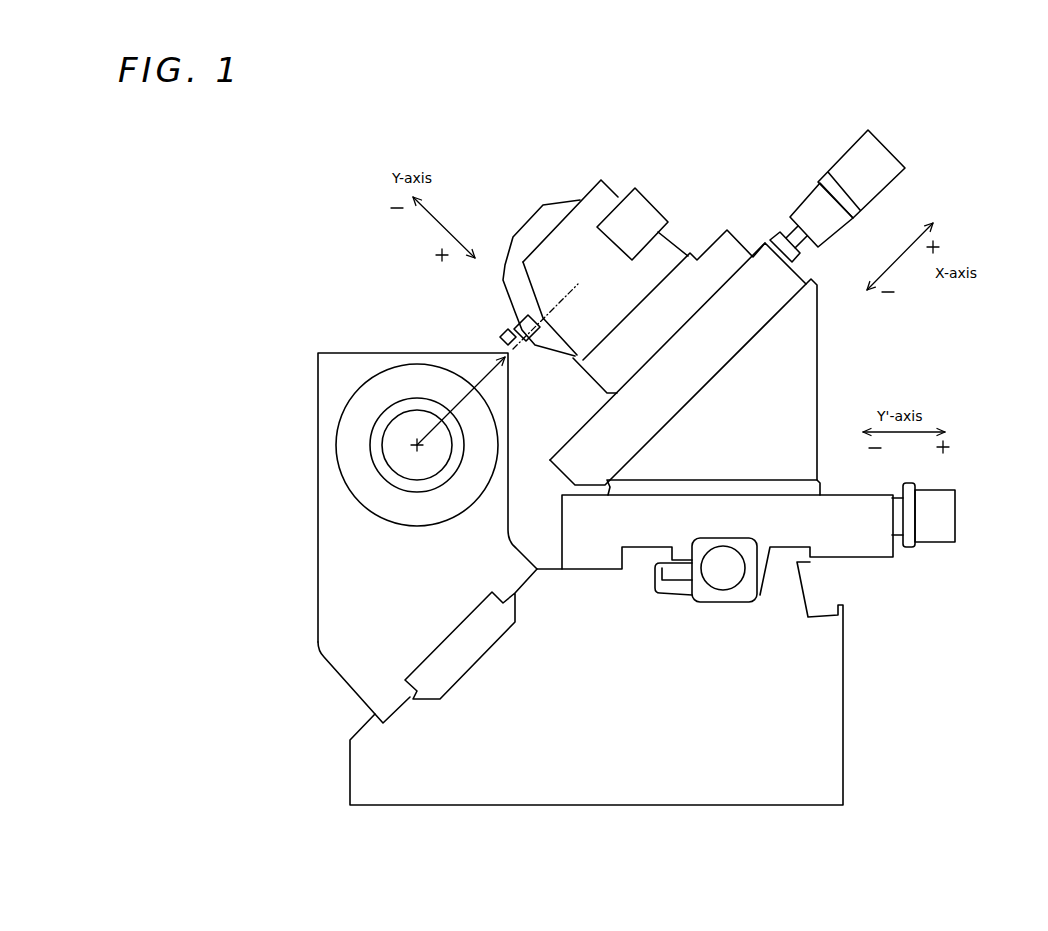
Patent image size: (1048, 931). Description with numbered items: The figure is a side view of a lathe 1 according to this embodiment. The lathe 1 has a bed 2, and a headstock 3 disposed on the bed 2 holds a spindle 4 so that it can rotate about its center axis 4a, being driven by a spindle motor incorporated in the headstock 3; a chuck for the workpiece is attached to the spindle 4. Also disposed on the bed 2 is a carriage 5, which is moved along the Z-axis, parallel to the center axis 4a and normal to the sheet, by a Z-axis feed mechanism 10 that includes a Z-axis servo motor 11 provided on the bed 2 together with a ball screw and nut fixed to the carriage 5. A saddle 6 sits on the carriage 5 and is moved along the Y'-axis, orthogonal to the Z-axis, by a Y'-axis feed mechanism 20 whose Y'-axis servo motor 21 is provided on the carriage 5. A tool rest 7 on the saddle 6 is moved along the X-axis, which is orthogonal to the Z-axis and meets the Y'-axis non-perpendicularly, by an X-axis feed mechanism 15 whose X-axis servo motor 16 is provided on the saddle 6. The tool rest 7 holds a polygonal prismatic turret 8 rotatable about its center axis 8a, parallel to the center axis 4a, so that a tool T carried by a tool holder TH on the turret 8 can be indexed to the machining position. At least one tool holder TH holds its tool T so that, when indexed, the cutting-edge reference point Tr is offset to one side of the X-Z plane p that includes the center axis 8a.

The lathe 1 is at (274, 208).
The bed 2 is at (835, 753).
The headstock 3 is at (318, 590).
The spindle 4 is at (372, 455).
The center axis 4a is at (413, 440).
The carriage 5 is at (845, 550).
The saddle 6 is at (813, 332).
The tool rest 7 is at (620, 193).
The turret 8 is at (528, 217).
The center axis 8a is at (580, 277).
The Z-axis feed mechanism 10 is at (748, 603).
The Z-axis servo motor 11 is at (750, 597).
The X-axis feed mechanism 15 is at (778, 195).
The X-axis servo motor 16 is at (893, 145).
The Y'-axis feed mechanism 20 is at (903, 553).
The Y'-axis servo motor 21 is at (953, 517).
The tool T is at (498, 333).
The tool holder TH is at (530, 353).
The cutting-edge reference point Tr is at (507, 353).
The X-Z plane p is at (510, 337).